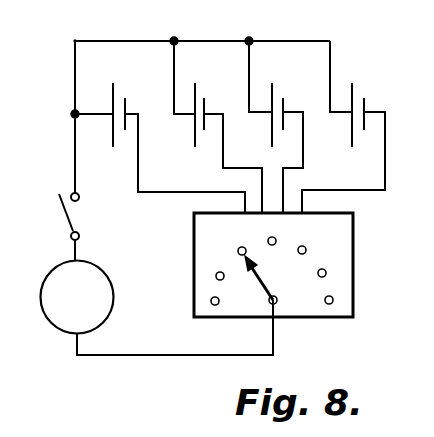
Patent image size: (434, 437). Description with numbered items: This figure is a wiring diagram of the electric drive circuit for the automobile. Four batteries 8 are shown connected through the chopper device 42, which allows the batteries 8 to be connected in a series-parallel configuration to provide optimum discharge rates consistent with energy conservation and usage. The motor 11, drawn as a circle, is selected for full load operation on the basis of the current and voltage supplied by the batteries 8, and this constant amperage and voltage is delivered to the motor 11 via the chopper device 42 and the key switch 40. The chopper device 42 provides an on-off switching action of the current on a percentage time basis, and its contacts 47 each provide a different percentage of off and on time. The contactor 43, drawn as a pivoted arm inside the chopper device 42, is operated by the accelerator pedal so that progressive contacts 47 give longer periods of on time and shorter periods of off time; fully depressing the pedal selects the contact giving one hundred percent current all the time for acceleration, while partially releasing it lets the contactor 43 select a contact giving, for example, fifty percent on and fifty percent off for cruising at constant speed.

The batteries 8 is at (112, 92).
The motor 11 is at (101, 319).
The key switch 40 is at (65, 210).
The chopper device 42 is at (355, 259).
The contactor 43 is at (262, 282).
The contacts 47 is at (275, 238).